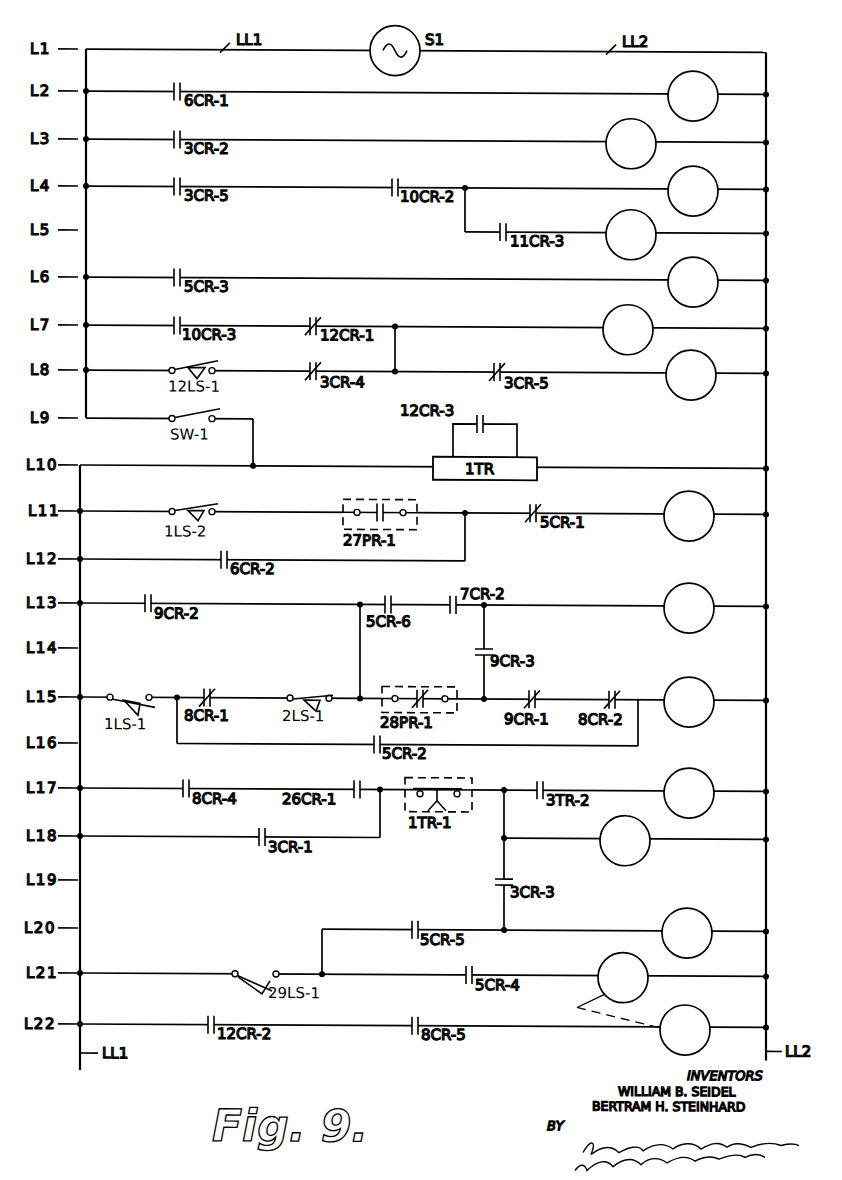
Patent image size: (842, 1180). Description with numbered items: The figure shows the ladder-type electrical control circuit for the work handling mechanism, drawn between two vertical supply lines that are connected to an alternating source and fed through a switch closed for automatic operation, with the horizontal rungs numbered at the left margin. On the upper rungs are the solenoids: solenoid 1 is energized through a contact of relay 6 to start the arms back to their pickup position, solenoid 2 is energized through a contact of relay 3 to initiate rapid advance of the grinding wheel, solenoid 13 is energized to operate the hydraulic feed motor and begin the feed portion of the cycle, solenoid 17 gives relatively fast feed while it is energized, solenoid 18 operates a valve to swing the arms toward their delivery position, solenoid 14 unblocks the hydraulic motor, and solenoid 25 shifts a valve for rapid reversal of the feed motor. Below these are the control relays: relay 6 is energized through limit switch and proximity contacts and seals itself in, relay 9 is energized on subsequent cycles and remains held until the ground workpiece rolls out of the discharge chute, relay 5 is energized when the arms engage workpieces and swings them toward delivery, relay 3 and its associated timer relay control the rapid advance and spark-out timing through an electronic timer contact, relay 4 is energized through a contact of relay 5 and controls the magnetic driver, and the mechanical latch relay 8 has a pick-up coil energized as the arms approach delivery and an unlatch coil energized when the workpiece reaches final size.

The solenoid 1SOL 1 is at (693, 96).
The solenoid 2SOL 2 is at (631, 144).
The solenoid 13SOL 13 is at (693, 191).
The solenoid 17SOL 17 is at (631, 235).
The solenoid 18SOL 18 is at (693, 282).
The solenoid 14SOL 14 is at (628, 330).
The solenoid 25SOL 25 is at (691, 375).
The relay 6CR 6 is at (689, 516).
The relay 9CR 9 is at (689, 608).
The relay 5CR 5 is at (689, 702).
The relay 3CR and timer relay 3TR 3 is at (657, 817).
The relay 4CR 4 is at (687, 933).
The mechanical latch relay 8CR coils 8CRL and 8CRU 8 is at (654, 1004).